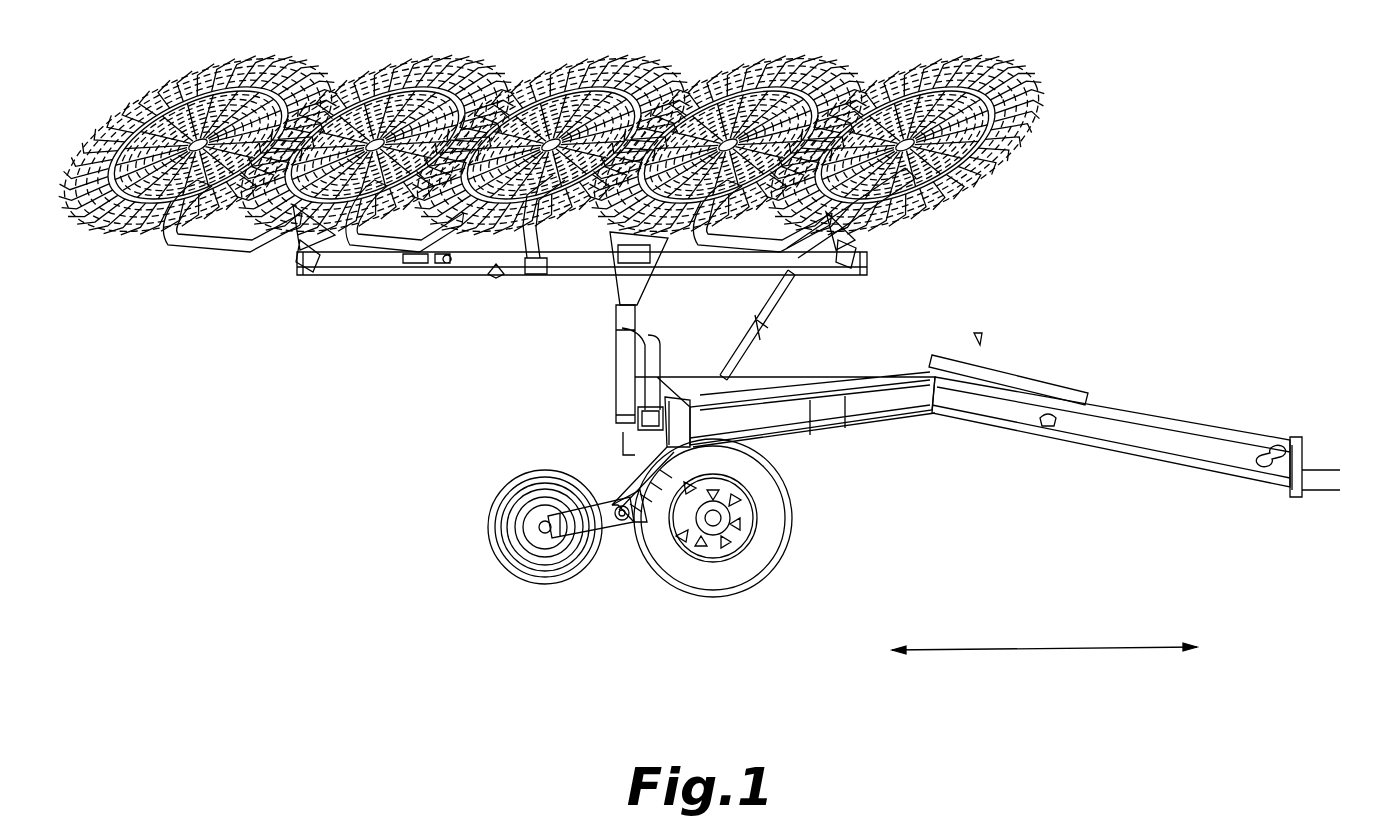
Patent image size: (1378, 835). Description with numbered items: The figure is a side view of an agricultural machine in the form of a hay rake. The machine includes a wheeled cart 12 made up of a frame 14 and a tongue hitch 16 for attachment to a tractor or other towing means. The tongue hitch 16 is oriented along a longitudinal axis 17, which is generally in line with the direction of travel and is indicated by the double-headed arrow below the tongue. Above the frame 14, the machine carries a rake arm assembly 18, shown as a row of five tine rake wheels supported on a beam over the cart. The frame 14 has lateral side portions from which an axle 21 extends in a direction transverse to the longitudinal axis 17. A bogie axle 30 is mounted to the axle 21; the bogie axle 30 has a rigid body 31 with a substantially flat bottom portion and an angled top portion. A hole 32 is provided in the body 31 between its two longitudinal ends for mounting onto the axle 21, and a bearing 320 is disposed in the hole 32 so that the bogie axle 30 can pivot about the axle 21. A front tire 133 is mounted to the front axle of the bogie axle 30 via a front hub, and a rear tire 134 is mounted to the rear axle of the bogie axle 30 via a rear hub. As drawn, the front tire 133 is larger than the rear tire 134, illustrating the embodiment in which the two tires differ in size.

The rake arm assembly 18 is at (1038, 71).
The frame 14 is at (777, 385).
The wheeled cart 12 is at (852, 400).
The tongue hitch 16 is at (1180, 442).
The axle 21 is at (612, 503).
The rigid body 31 is at (598, 500).
The bogie axle 30 is at (597, 528).
The hole 32 is at (628, 530).
The bearing 320 is at (623, 527).
The front tire 133 is at (762, 565).
The rear tire 134 is at (505, 570).
The longitudinal axis 17 is at (1044, 664).